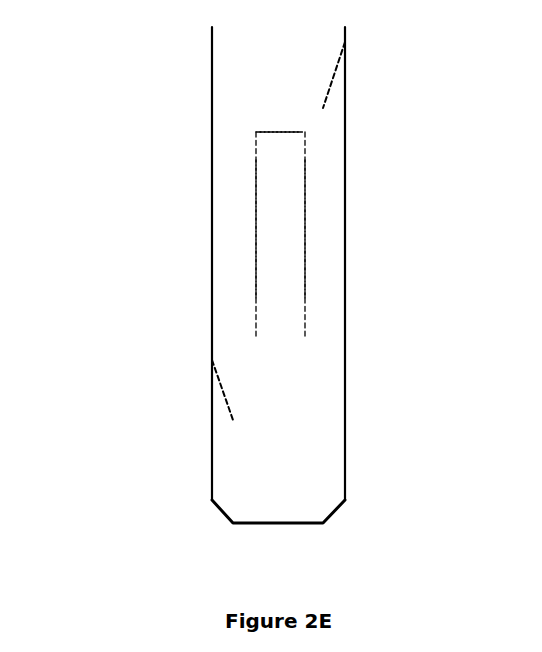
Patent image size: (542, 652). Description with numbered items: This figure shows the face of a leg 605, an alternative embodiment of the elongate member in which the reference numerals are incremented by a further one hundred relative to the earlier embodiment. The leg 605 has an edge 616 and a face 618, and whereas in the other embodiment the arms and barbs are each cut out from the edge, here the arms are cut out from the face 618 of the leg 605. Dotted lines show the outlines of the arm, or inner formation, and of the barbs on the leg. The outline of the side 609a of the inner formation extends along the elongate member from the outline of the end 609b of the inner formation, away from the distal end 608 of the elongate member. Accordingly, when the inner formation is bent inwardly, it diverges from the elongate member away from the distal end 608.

The leg 605 is at (187, 345).
The distal end 608 is at (270, 527).
The side of the inner formation 609a is at (256, 213).
The end of the inner formation 609b is at (275, 130).
The edge 616 is at (212, 265).
The face 618 is at (305, 409).